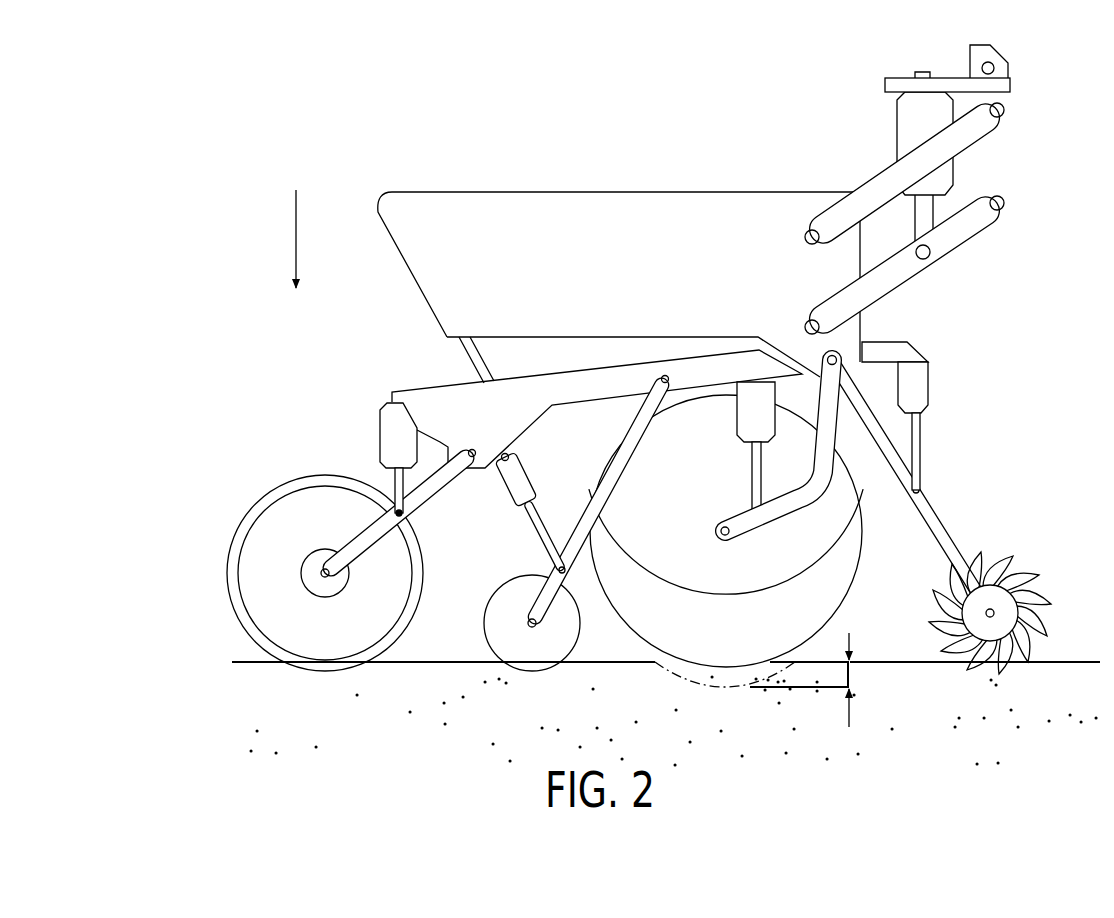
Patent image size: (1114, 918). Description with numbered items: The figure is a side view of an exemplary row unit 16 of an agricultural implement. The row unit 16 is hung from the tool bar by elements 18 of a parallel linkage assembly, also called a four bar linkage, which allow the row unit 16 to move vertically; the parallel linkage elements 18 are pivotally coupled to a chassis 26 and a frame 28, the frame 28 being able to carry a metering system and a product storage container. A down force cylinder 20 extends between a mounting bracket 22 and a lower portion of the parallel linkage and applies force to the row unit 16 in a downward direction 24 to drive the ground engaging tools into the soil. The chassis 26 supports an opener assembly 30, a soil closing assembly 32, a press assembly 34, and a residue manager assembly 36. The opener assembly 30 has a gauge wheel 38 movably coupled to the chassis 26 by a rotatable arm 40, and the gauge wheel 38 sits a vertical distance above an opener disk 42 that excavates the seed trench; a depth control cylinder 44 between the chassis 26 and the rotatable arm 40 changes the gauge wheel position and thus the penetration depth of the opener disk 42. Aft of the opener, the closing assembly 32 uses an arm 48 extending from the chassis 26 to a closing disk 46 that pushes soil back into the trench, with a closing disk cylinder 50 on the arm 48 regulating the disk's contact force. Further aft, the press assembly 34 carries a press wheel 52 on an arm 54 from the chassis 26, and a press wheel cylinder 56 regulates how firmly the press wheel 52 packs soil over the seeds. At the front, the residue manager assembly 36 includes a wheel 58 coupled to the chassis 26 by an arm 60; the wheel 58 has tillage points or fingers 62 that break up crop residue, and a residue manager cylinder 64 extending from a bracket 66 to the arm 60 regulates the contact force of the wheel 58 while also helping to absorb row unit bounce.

The row unit 16 is at (490, 84).
The parallel linkage elements 18 is at (975, 140).
The down force cylinder 20 is at (897, 130).
The mounting bracket 22 is at (970, 62).
The downward direction 24 is at (296, 235).
The chassis 26 is at (423, 388).
The frame 28 is at (623, 191).
The opener assembly 30 is at (878, 592).
The soil closing assembly 32 is at (498, 573).
The press assembly 34 is at (258, 445).
The residue manager assembly 36 is at (957, 482).
The gauge wheel 38 is at (868, 500).
The rotatable arm 40 is at (762, 527).
The opener disk 42 is at (668, 674).
The depth control cylinder 44 is at (737, 440).
The closing disk 46 is at (484, 627).
The arm 48 is at (640, 408).
The closing disk cylinder 50 is at (532, 476).
The press wheel 52 is at (230, 577).
The arm 54 is at (437, 495).
The press wheel cylinder 56 is at (378, 438).
The wheel 58 is at (1000, 622).
The arm 60 is at (940, 530).
The tillage points or fingers 62 is at (1032, 575).
The residue manager cylinder 64 is at (930, 383).
The bracket 66 is at (904, 332).